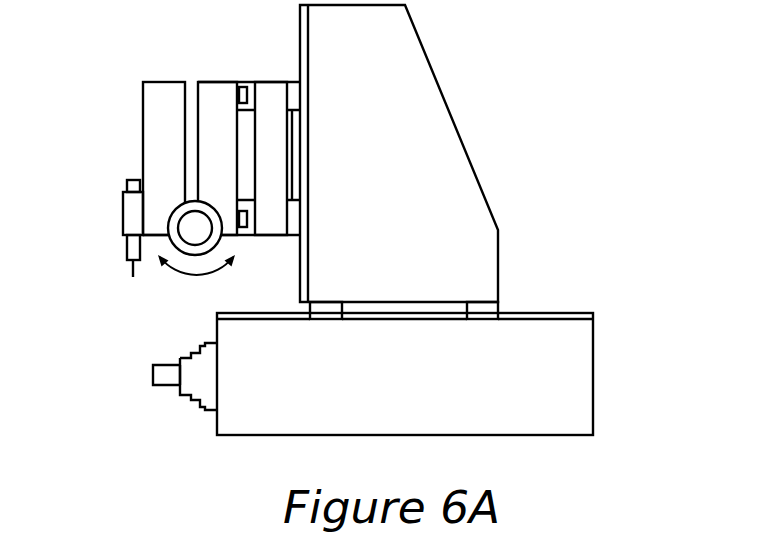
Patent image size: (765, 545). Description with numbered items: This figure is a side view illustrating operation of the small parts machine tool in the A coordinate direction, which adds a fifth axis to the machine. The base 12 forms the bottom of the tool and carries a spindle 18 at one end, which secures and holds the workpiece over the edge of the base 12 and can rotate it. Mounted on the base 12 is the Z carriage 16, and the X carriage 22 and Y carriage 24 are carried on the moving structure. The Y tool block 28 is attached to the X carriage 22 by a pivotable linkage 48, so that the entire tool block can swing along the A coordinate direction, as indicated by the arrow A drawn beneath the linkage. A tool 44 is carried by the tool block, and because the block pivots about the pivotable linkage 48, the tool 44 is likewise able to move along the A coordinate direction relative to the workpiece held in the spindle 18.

The base 12 is at (572, 387).
The Z carriage 16 is at (436, 124).
The spindle 18 is at (190, 400).
The X carriage 22 is at (217, 97).
The Y carriage 24 is at (273, 88).
The Y tool block 28 is at (148, 127).
The tool 44 is at (127, 252).
The pivotable linkage 48 is at (219, 240).